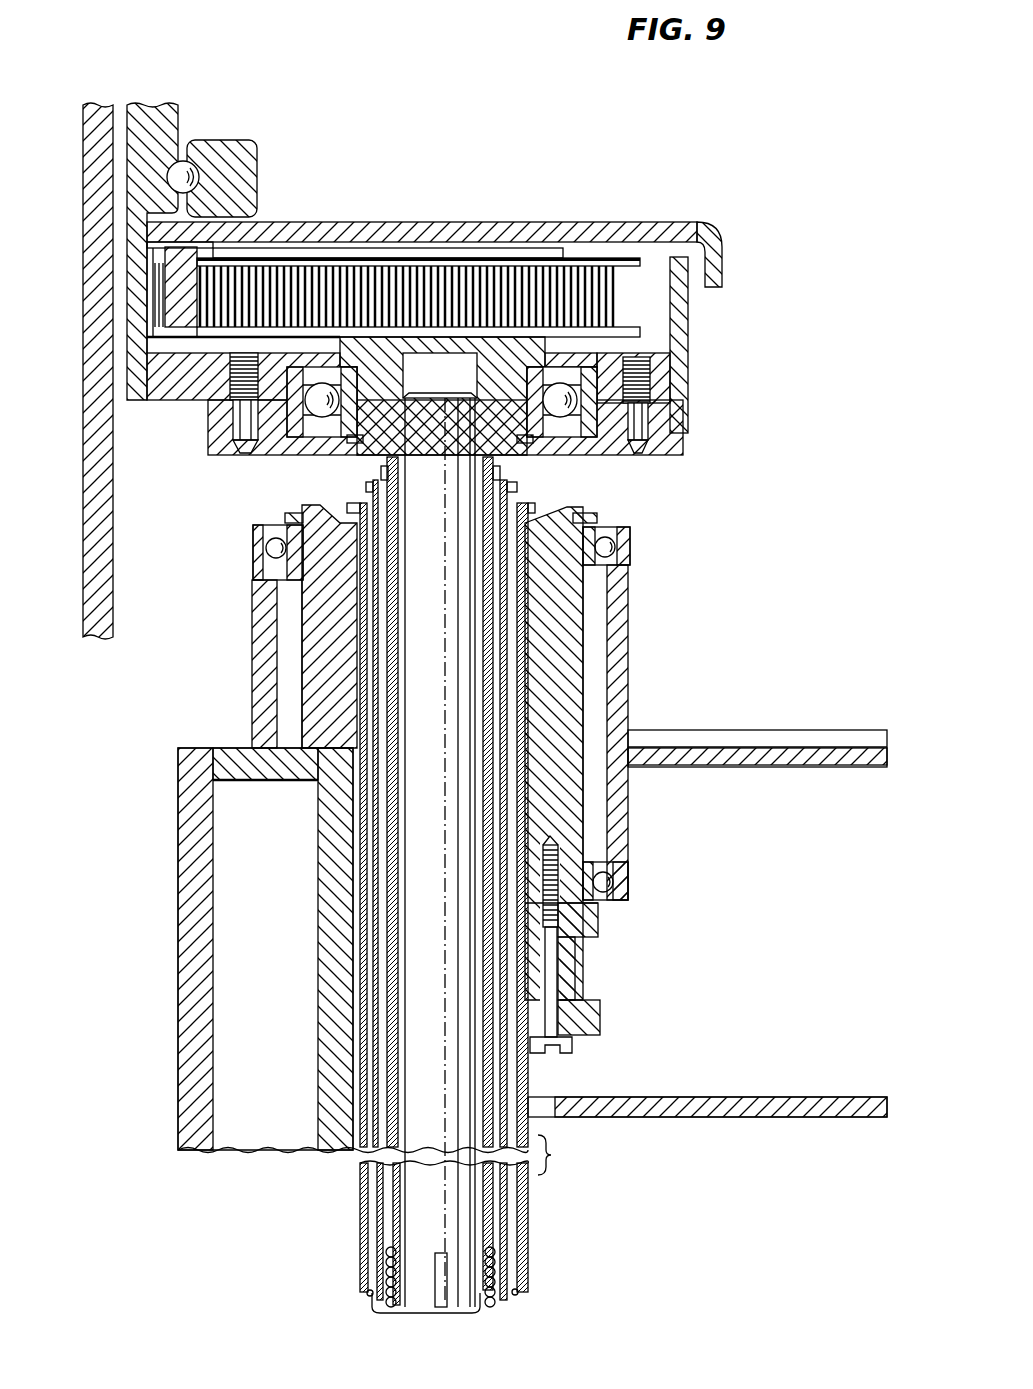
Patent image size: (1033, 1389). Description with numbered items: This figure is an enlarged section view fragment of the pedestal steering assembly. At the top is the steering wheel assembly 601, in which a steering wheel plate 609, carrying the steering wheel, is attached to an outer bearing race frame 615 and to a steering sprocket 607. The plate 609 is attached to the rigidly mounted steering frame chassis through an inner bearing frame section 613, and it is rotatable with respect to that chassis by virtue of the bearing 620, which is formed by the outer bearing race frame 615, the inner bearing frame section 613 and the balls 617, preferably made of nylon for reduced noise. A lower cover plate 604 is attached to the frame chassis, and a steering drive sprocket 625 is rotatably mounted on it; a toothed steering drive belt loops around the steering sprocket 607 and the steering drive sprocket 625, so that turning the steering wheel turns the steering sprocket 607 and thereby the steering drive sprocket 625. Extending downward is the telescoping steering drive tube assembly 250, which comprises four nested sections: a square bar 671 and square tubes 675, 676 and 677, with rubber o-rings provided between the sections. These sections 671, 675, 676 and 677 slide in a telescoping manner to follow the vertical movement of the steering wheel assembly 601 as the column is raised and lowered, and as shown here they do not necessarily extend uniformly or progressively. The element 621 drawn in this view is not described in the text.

The telescoping steering drive tube assembly 250 is at (540, 1073).
The steering wheel assembly 601 is at (478, 222).
The lower cover plate 604 is at (173, 386).
The steering sprocket 607 is at (175, 284).
The steering wheel plate 609 is at (680, 222).
The inner bearing frame section 613 is at (176, 108).
The outer bearing race frame 615 is at (258, 162).
The balls 617 is at (192, 158).
The bearing 620 is at (210, 117).
The rotor plate 621 is at (240, 262).
The steering drive sprocket 625 is at (612, 306).
The square bar 671 is at (478, 1314).
The square tube section 675 is at (396, 1259).
The square tube section 676 is at (382, 1212).
The square tube section 677 is at (352, 1200).